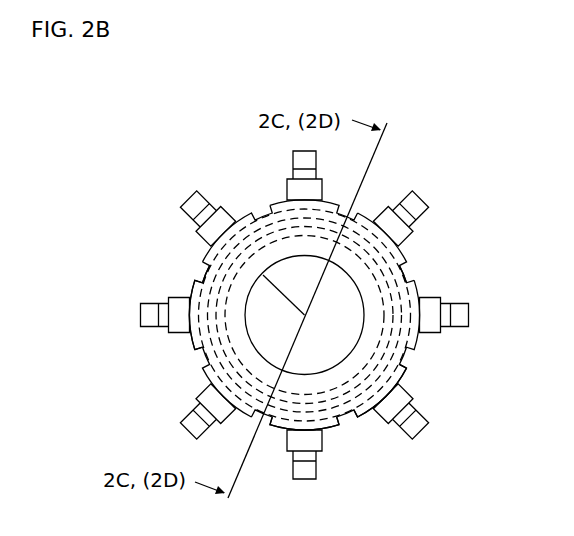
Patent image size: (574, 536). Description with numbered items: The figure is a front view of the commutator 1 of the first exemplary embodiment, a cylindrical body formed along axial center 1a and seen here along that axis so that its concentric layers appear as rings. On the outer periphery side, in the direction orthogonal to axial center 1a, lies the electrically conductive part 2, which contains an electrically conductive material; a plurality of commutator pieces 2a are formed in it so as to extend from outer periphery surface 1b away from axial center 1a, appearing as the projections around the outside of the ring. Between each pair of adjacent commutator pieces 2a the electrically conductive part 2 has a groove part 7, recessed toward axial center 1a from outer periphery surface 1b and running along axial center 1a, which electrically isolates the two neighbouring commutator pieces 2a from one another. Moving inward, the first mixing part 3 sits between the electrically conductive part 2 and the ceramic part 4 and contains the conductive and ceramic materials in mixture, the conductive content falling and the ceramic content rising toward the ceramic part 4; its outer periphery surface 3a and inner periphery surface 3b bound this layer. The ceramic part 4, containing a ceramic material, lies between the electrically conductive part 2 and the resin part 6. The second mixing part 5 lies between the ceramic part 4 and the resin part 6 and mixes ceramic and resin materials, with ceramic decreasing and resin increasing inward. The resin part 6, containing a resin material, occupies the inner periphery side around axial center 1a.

The commutator 1 is at (226, 191).
The axial center 1a is at (208, 273).
The outer periphery surface 1b is at (263, 275).
The electrically conductive part 2 is at (333, 428).
The commutator piece 2a is at (462, 312).
The first mixing part 3 is at (362, 415).
The outer periphery surface of first mixing part 3a is at (197, 318).
The inner periphery surface of first mixing part 3b is at (207, 345).
The ceramic part 4 is at (390, 398).
The second mixing part 5 is at (374, 362).
The resin part 6 is at (368, 332).
The groove part 7 is at (402, 275).